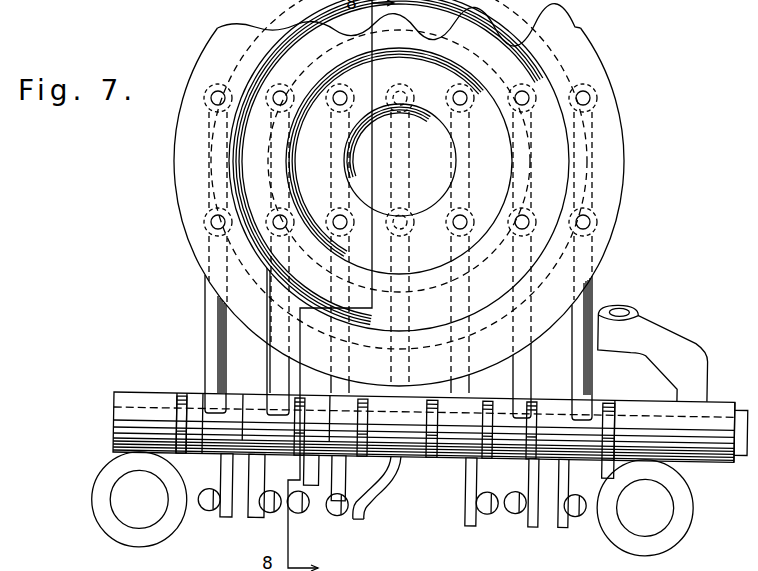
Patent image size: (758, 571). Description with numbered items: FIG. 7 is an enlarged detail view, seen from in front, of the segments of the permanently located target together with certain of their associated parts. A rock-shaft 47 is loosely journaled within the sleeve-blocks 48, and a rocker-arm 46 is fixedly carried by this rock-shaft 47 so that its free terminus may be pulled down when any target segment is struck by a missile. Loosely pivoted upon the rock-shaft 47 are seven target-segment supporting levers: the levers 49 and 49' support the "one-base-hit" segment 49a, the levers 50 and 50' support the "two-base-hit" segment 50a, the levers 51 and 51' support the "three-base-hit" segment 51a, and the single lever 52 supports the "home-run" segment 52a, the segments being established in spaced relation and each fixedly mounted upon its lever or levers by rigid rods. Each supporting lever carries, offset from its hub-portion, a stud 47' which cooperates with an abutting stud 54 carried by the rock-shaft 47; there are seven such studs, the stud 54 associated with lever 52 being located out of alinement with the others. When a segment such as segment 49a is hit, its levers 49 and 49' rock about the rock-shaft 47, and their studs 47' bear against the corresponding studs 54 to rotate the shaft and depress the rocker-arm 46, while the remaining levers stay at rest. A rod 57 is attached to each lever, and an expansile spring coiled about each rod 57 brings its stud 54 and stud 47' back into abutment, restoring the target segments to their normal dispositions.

The rocker-arm 46 is at (660, 332).
The rock-shaft 47 is at (595, 476).
The stud 47' is at (400, 404).
The sleeve-block 48 is at (112, 506).
The target-segment supporting lever 49 is at (198, 344).
The target-segment supporting lever 49' is at (605, 348).
The one-base-hit segment 49a is at (399, 193).
The target-segment supporting lever 50 is at (262, 341).
The target-segment supporting lever 50' is at (540, 380).
The two-base-hit segment 50a is at (708, 567).
The target-segment supporting lever 51 is at (285, 486).
The target-segment supporting lever 51' is at (499, 493).
The three-base-hit segment 51a is at (481, 309).
The target-segment supporting lever 52 is at (392, 454).
The home-run segment 52a is at (400, 160).
The stud 54 is at (338, 96).
The rod 57 is at (210, 506).